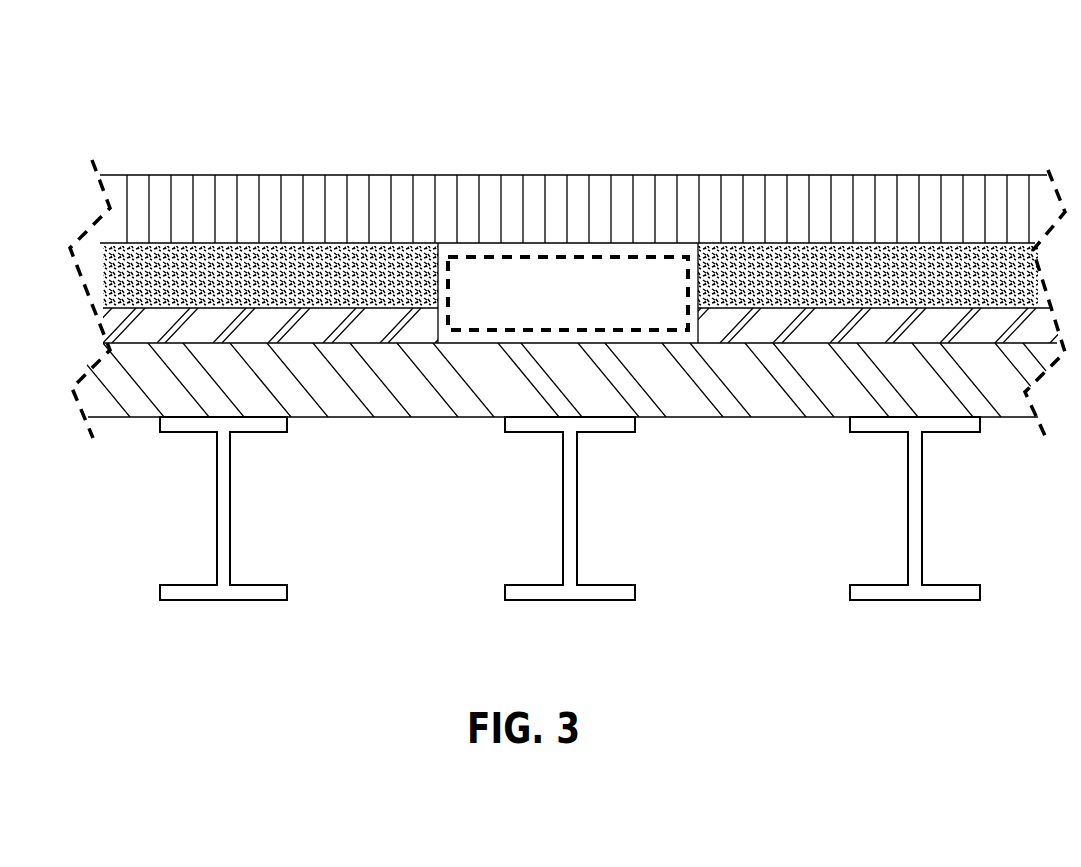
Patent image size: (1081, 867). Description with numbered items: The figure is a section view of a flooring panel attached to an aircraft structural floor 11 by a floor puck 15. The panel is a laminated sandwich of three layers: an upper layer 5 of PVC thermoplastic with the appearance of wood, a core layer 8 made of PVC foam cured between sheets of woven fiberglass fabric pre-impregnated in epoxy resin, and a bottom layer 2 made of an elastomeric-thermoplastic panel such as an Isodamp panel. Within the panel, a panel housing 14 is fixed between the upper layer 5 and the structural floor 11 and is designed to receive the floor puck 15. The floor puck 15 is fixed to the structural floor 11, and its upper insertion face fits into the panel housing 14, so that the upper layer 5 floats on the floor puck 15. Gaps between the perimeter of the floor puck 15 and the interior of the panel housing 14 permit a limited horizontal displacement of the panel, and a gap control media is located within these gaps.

The upper layer 5 is at (885, 200).
The core layer 8 is at (222, 250).
The bottom layer 2 is at (367, 333).
The structural floor 11 is at (755, 385).
The panel housing 14 is at (553, 283).
The floor puck 15 is at (660, 242).